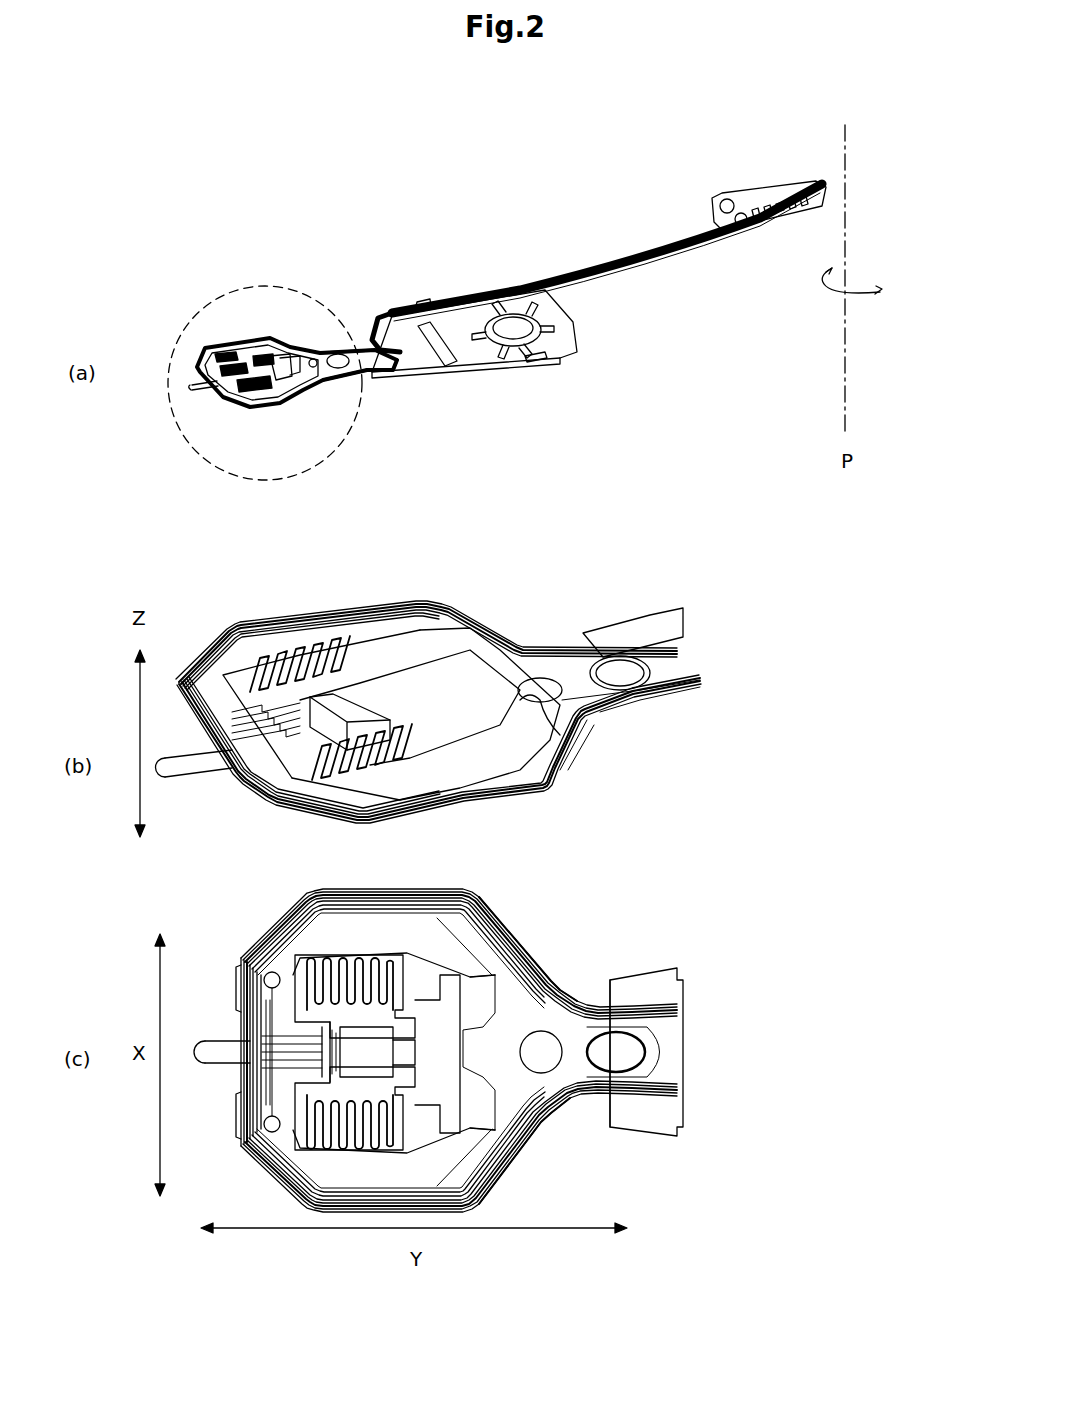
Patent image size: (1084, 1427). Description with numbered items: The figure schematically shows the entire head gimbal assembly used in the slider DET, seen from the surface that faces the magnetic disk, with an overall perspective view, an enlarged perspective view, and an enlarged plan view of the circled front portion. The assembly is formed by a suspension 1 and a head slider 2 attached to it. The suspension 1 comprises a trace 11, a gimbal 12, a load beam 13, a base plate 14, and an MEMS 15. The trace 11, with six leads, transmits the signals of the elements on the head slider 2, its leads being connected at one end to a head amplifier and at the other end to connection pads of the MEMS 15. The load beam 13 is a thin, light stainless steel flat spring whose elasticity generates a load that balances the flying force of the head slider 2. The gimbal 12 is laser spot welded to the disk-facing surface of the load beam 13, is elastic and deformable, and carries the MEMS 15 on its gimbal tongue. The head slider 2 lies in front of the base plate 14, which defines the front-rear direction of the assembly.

The suspension 1 is at (474, 238).
The slider 2 is at (270, 344).
The trace 11 is at (380, 312).
The gimbal 12 is at (322, 400).
The load beam 13 is at (405, 374).
The base plate 14 is at (448, 374).
The MEMS 15 is at (300, 336).